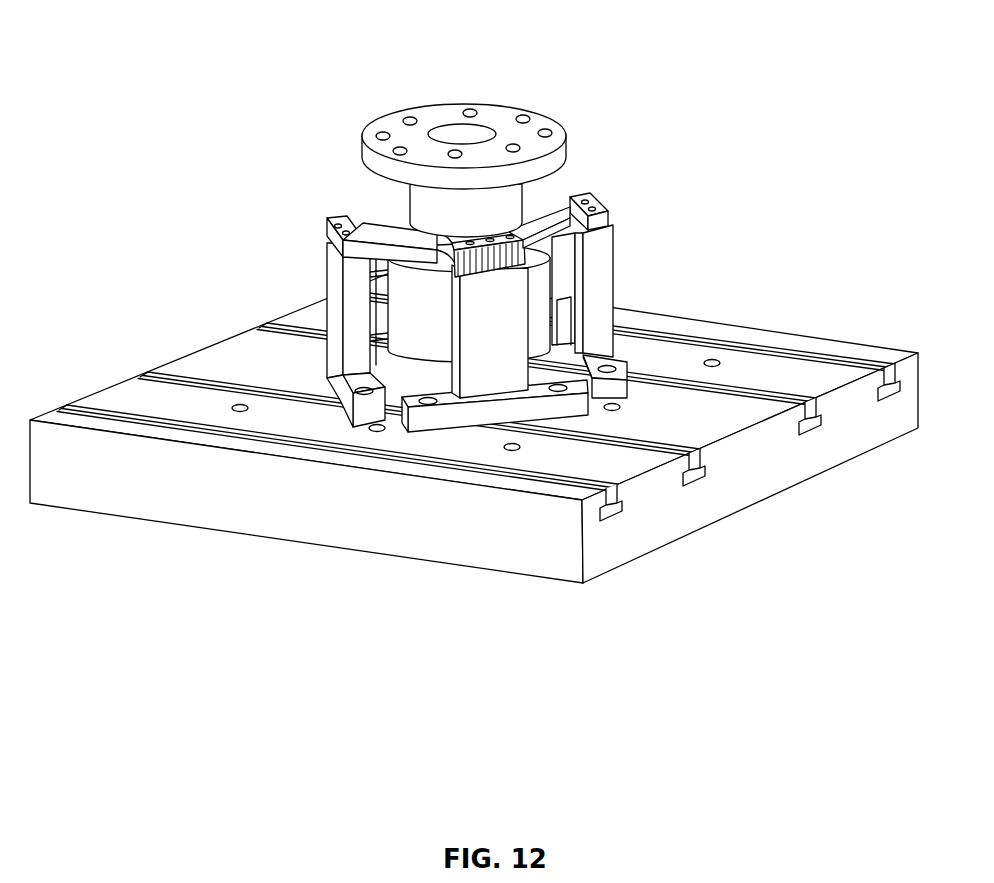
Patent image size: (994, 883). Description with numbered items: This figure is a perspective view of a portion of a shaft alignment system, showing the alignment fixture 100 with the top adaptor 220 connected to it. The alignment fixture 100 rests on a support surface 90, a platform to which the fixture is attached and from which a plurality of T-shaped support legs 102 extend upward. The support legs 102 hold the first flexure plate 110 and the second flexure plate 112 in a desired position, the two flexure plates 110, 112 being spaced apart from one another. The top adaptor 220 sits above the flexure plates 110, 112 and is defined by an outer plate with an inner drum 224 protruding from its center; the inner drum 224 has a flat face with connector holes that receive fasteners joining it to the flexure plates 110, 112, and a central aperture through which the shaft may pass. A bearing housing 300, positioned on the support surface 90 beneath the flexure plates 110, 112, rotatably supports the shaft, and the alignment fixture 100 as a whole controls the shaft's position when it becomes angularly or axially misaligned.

The support surface 90 is at (378, 512).
The alignment fixture 100 is at (248, 182).
The support legs 102 is at (327, 280).
The first flexure plate 110 is at (380, 222).
The second flexure plate 112 is at (603, 230).
The top adaptor 220 is at (503, 110).
The inner drum 224 is at (503, 212).
The bearing housing 300 is at (403, 313).